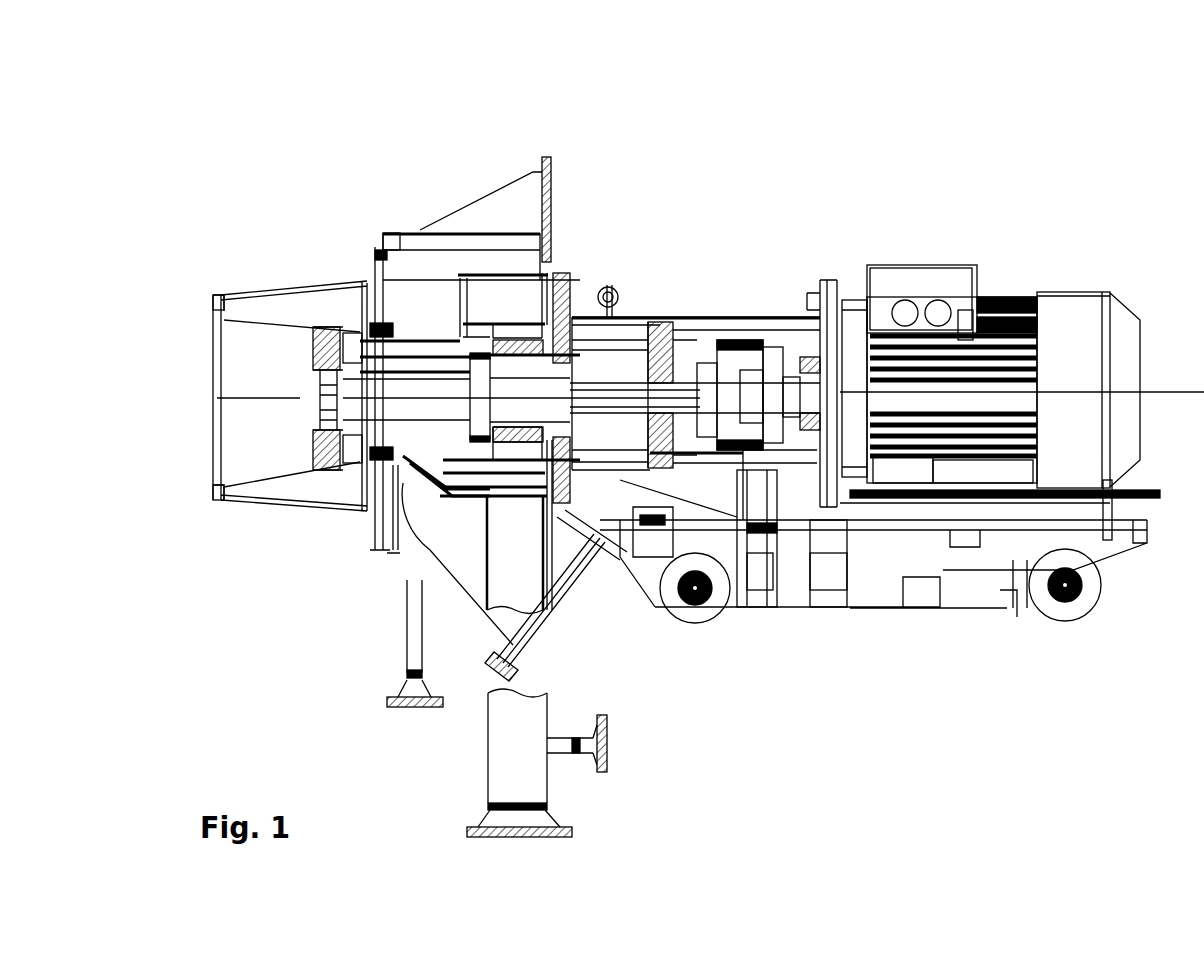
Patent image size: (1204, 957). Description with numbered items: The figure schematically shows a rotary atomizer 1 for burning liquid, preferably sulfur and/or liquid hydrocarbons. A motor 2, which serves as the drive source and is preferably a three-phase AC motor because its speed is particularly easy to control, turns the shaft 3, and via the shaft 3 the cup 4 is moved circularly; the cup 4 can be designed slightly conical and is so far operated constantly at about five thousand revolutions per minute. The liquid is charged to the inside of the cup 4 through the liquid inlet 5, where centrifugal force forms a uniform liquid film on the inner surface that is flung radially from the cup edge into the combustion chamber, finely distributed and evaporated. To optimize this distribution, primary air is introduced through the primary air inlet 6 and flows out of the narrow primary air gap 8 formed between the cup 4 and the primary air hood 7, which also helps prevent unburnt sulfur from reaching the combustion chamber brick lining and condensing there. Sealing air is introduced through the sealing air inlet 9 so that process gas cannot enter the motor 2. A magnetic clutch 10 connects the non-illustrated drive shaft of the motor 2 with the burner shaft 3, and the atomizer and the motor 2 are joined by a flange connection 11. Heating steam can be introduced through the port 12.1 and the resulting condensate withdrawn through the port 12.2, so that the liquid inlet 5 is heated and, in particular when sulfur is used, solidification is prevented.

The rotary atomizer 1 is at (553, 227).
The motor 2 is at (1080, 307).
The shaft 3 is at (623, 383).
The cup 4 is at (243, 317).
The inlet liquid 5 is at (522, 840).
The inlet primary air 6 is at (565, 613).
The primary air hood 7 is at (320, 287).
The primary air gap 8 is at (210, 494).
The inlet sealing air 9 is at (604, 270).
The magnetic clutch 10 is at (746, 318).
The flange connection 11 is at (828, 280).
The inlet heating steam 12.1 is at (607, 745).
The outlet condensate 12.2 is at (415, 706).